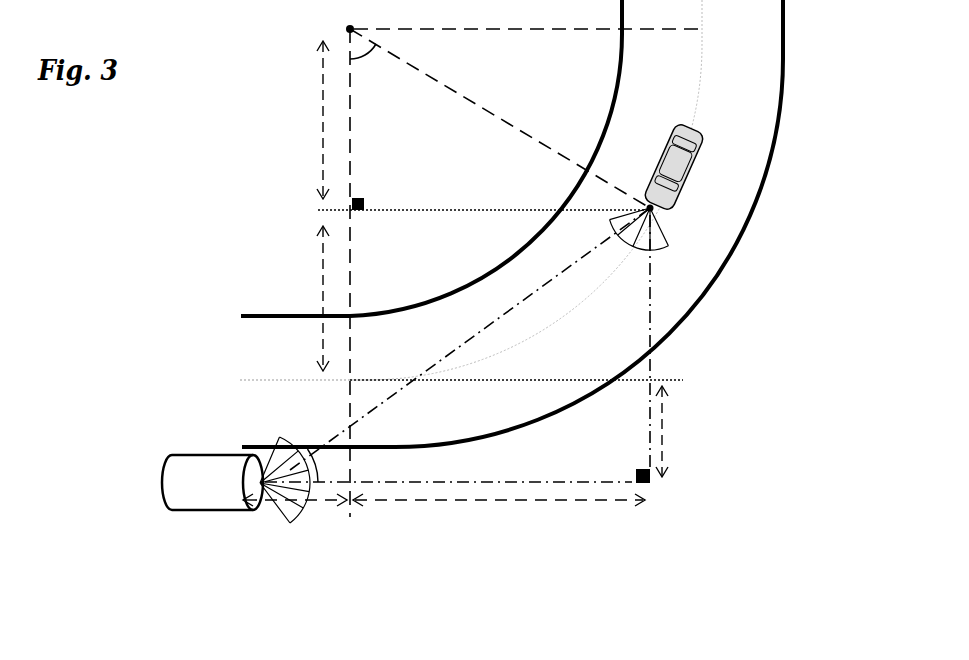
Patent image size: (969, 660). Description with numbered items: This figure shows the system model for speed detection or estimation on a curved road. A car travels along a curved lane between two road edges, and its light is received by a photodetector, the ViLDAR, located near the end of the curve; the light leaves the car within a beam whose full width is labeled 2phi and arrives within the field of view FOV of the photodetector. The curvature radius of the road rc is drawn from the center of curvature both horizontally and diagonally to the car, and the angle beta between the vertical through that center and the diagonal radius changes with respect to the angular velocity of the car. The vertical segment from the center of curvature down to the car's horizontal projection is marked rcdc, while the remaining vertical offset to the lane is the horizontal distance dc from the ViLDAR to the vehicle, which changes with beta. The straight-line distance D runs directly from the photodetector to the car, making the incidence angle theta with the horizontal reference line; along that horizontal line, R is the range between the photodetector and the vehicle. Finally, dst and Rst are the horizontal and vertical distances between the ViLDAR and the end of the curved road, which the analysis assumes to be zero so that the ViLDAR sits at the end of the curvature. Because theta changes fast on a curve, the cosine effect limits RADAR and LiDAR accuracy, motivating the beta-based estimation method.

The curvature radius of the road rc is at (526, 104).
The angle beta is at (369, 69).
The rc minus dc distance rcdc is at (294, 120).
The horizontal distance from ViLDAR to vehicle dc is at (308, 298).
The horizontal distance to end of curved road dst is at (680, 431).
The range R is at (499, 517).
The vertical distance to end of curved road Rst is at (295, 517).
The distance D is at (470, 339).
The element photodetector is at (212, 482).
The field of view FOV is at (285, 480).
The incidence angle theta is at (325, 465).
The element car is at (674, 166).
The headlight beam angle 2phi is at (639, 228).